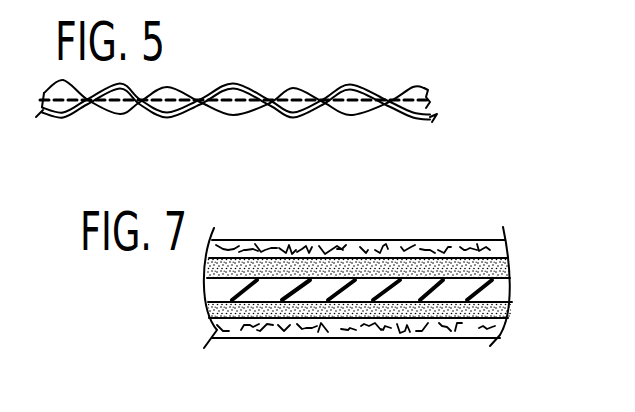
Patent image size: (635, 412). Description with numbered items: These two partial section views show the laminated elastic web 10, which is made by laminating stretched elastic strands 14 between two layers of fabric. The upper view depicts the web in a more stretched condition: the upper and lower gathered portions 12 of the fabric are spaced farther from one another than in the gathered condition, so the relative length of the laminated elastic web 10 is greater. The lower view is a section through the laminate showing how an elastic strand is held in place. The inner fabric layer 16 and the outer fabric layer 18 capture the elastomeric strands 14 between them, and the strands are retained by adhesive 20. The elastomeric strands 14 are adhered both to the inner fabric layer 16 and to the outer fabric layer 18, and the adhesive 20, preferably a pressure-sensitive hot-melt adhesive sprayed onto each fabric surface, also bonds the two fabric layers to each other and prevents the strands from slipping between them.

In FIG. 5, the laminated elastic web 10 is at (281, 68).
In FIG. 5, the gathered portions 12 is at (232, 82).
In FIG. 5, the elastic strands 14 is at (177, 97).
In FIG. 7, the elastic strands 14 is at (495, 289).
In FIG. 7, the inner fabric layer 16 is at (428, 244).
In FIG. 7, the outer fabric layer 18 is at (436, 334).
In FIG. 7, the adhesive 20 is at (272, 268).